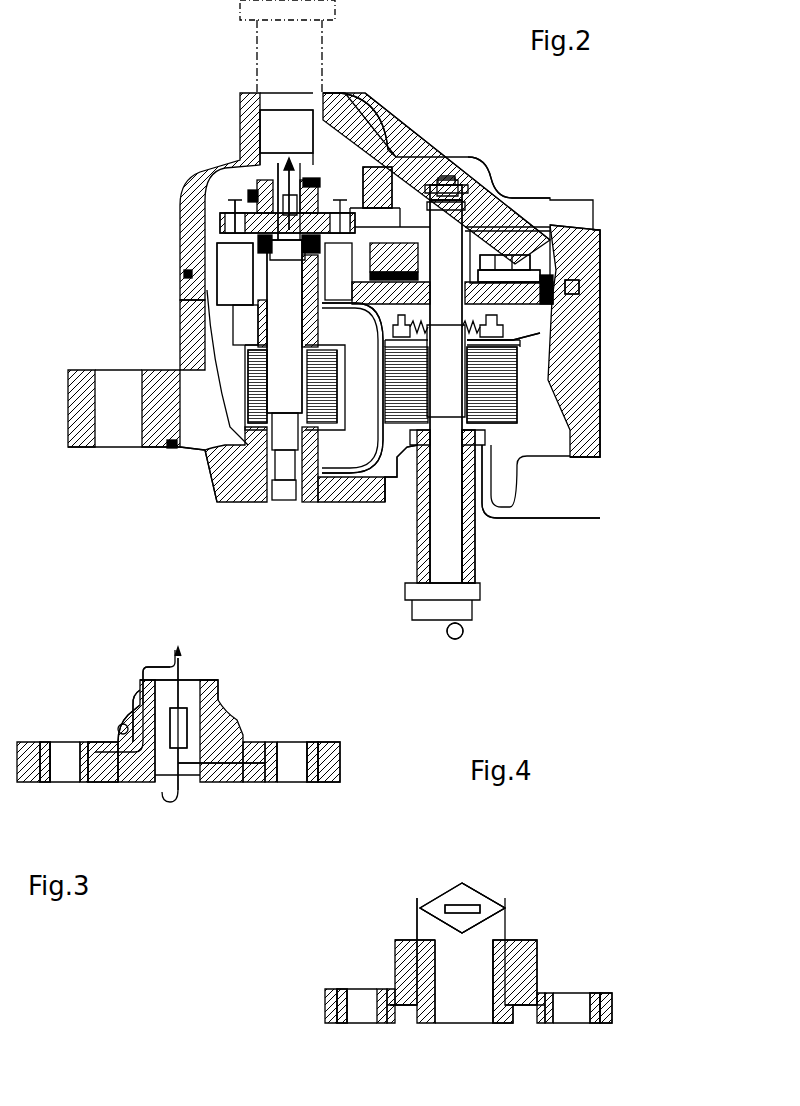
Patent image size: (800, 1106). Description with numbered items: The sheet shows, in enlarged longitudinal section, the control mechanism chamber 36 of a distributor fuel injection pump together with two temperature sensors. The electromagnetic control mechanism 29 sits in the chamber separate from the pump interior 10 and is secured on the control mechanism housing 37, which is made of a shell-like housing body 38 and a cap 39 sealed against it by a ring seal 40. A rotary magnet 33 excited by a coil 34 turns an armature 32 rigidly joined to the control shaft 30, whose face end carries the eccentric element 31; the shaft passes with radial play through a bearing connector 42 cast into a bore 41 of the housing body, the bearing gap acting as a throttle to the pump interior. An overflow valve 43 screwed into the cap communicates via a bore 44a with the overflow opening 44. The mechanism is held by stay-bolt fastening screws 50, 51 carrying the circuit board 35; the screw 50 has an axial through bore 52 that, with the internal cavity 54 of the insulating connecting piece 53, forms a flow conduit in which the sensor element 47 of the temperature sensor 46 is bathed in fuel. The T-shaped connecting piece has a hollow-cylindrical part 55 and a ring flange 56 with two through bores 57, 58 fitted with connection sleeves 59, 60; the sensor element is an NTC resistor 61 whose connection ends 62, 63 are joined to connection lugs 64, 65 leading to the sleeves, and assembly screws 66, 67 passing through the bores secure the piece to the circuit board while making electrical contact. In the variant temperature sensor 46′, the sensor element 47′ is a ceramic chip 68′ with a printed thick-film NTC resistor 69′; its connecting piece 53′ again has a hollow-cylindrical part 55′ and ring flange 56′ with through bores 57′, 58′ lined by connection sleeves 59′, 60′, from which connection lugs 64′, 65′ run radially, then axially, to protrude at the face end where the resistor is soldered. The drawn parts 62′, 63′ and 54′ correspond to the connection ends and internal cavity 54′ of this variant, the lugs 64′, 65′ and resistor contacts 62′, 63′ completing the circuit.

In FIG. 2, the pump interior 10 is at (268, 544).
In FIG. 2, the electromagnetic control mechanism 29 is at (523, 318).
In FIG. 2, the control shaft 30 is at (445, 466).
In FIG. 2, the eccentric element 31 is at (455, 627).
In FIG. 2, the armature 32 is at (497, 387).
In FIG. 2, the rotary magnet 33 is at (375, 462).
In FIG. 2, the coil 34 is at (337, 455).
In FIG. 2, the circuit board 35 is at (553, 277).
In FIG. 2, the control mechanism chamber 36 is at (225, 312).
In FIG. 2, the control mechanism housing 37 is at (198, 480).
In FIG. 2, the housing body 38 is at (560, 408).
In FIG. 2, the cap 39 is at (503, 217).
In FIG. 2, the ring seal 40 is at (570, 283).
In FIG. 2, the bore 41 is at (482, 518).
In FIG. 2, the bearing connector 42 is at (470, 537).
In FIG. 2, the overflow valve 43 is at (448, 152).
In FIG. 2, the overflow opening 44 is at (290, 125).
In FIG. 2, the bore 44a is at (300, 185).
In FIG. 2, the temperature sensor 46 is at (217, 165).
In FIG. 3, the temperature sensor 46 is at (122, 692).
In FIG. 2, the sensor element 47 is at (258, 150).
In FIG. 3, the sensor element 47 is at (122, 770).
In FIG. 2, the fastening screw 50 is at (288, 345).
In FIG. 2, the fastening screw 51 is at (470, 332).
In FIG. 2, the through bore 52 is at (285, 278).
In FIG. 2, the connecting piece 53 is at (360, 168).
In FIG. 3, the connecting piece 53 is at (97, 788).
In FIG. 2, the internal cavity 54 is at (340, 118).
In FIG. 3, the internal cavity 54 is at (195, 705).
In FIG. 3, the hollow-cylindrical part 55 is at (130, 697).
In FIG. 3, the ring flange 56 is at (330, 772).
In FIG. 3, the through bore 57 is at (284, 765).
In FIG. 3, the through bore 58 is at (66, 765).
In FIG. 3, the connection sleeve 59 is at (312, 768).
In FIG. 3, the connection sleeve 60 is at (44, 772).
In FIG. 3, the NTC resistor 61 is at (158, 733).
In FIG. 3, the connection end 62 is at (168, 793).
In FIG. 3, the connection end 63 is at (182, 668).
In FIG. 3, the connection lug 64 is at (240, 763).
In FIG. 3, the connection lug 65 is at (158, 666).
In FIG. 2, the assembly screw 66 is at (415, 180).
In FIG. 2, the assembly screw 67 is at (233, 200).
In FIG. 4, the sensor element 47′ is at (463, 880).
In FIG. 4, the thick-film NTC resistor 69′ is at (457, 908).
In FIG. 4, the ceramic chip 68′ is at (473, 900).
In FIG. 4, the component 62′ is at (505, 898).
In FIG. 4, the connecting piece 53′ is at (513, 977).
In FIG. 4, the hollow-cylindrical part 55′ is at (517, 987).
In FIG. 4, the ring flange 56′ is at (614, 1003).
In FIG. 4, the connecting wire 63′ is at (417, 898).
In FIG. 4, the connection sleeve 60′ is at (343, 1023).
In FIG. 4, the through bore 58′ is at (365, 1008).
In FIG. 4, the connection lug 65′ is at (402, 1007).
In FIG. 4, the temperature sensor 46′ is at (423, 1030).
In FIG. 4, the hub bore 54′ is at (465, 1005).
In FIG. 4, the connection lug 64′ is at (515, 997).
In FIG. 4, the through bore 57′ is at (570, 1015).
In FIG. 4, the connection sleeve 59′ is at (600, 1023).